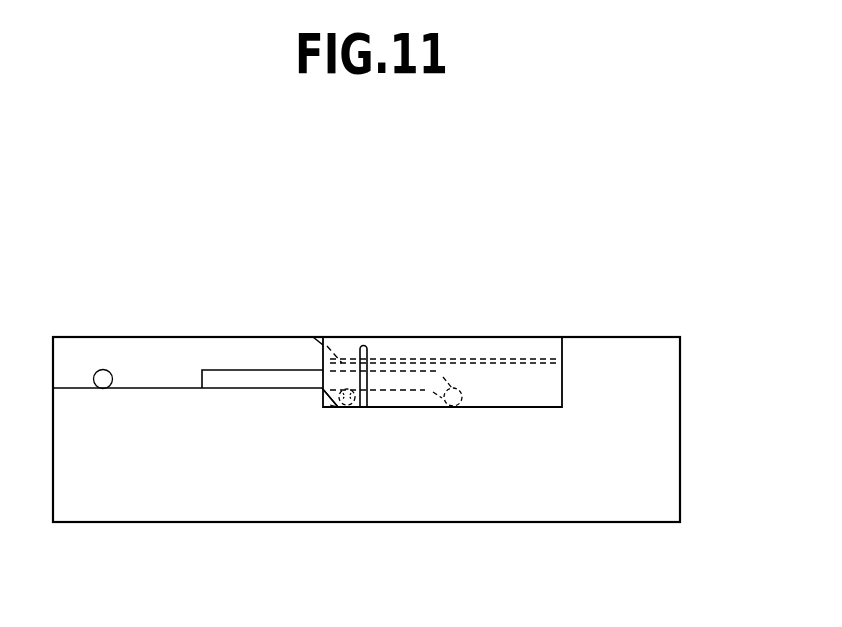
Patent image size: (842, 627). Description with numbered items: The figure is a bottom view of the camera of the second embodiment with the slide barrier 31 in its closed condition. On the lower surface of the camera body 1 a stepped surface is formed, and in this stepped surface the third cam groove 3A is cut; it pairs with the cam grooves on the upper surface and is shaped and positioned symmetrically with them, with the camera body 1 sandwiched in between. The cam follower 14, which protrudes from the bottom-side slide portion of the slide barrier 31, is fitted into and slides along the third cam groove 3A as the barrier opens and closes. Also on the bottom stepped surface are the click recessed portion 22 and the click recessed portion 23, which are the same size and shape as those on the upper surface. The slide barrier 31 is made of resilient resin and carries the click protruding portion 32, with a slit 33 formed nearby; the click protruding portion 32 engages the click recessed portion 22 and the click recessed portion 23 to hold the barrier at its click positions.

The camera body 1 is at (665, 451).
The third cam groove 3A is at (264, 381).
The cam follower 14 is at (456, 390).
The click recessed portion 22 is at (333, 405).
The click recessed portion 23 is at (102, 370).
The slide barrier 31 is at (529, 345).
The click protruding portion 32 is at (346, 391).
The slit 33 is at (368, 379).